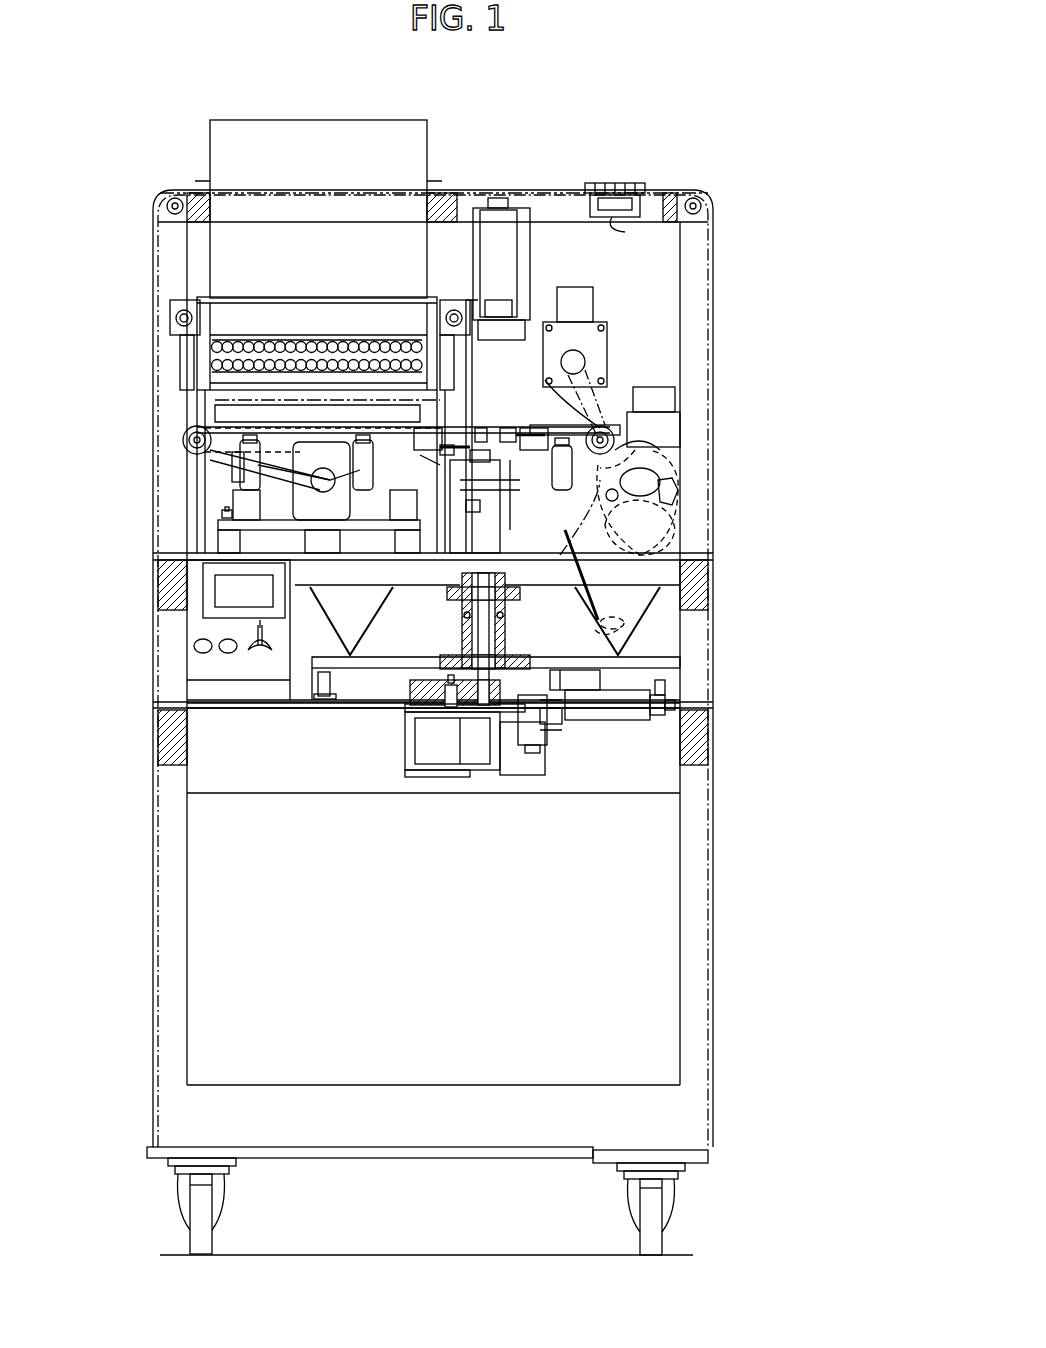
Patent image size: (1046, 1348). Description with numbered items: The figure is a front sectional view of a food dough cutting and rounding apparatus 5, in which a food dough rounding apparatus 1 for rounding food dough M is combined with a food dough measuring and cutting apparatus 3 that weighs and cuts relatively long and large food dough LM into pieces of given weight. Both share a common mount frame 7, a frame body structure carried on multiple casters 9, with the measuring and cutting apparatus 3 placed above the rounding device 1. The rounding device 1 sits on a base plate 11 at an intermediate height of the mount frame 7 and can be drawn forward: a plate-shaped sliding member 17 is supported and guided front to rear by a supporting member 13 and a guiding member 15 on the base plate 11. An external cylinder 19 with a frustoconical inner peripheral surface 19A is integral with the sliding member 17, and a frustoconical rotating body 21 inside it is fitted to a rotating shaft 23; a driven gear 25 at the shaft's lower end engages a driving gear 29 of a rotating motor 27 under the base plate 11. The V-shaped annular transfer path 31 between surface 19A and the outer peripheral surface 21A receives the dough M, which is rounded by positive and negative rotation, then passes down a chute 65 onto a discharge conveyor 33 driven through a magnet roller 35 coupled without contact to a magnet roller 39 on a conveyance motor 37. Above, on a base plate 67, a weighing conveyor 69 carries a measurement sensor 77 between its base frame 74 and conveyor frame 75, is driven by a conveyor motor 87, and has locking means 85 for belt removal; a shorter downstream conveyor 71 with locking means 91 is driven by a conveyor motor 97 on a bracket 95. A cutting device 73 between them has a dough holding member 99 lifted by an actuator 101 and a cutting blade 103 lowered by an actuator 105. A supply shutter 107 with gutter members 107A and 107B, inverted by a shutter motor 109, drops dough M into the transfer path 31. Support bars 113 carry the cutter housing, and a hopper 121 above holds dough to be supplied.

The food dough rounding apparatus 1 is at (660, 632).
The food dough measuring and cutting apparatus 3 is at (140, 350).
The food dough cutting and rounding apparatus 5 is at (740, 236).
The mount frame 7 is at (715, 808).
The casters 9 is at (232, 1206).
The base plate 11 is at (219, 710).
The supporting member 13 is at (682, 672).
The guiding member 15 is at (320, 690).
The sliding member 17 is at (315, 668).
The external cylinder 19 is at (300, 660).
The inner peripheral surface 19A is at (235, 620).
The rotating body 21 is at (375, 668).
The outer peripheral surface 21A is at (335, 700).
The rotating shaft 23 is at (487, 608).
The driven gear 25 is at (495, 705).
The rotating motor 27 is at (512, 770).
The driving gear 29 is at (448, 688).
The transfer path 31 is at (222, 645).
The discharge conveyor 33 is at (627, 722).
The magnet roller 35 is at (550, 735).
The conveyance motor 37 is at (432, 775).
The magnet roller 39 is at (532, 740).
The chute 65 is at (585, 690).
The base plate 67 is at (206, 590).
The weighing conveyor 69 is at (182, 442).
The downstream conveyor 71 is at (668, 418).
The cutting device 73 is at (542, 250).
The base frame 74 is at (240, 538).
The conveyor frame 75 is at (238, 462).
The measurement sensor 77 is at (232, 514).
The locking means 85 is at (362, 440).
The conveyor motor 87 is at (325, 470).
The locking means 91 is at (550, 470).
The bracket 95 is at (614, 430).
The conveyor motor 97 is at (608, 418).
The dough holding member 99 is at (456, 445).
The actuator 101 is at (460, 548).
The cutting blade 103 is at (597, 350).
The actuator 105 is at (505, 274).
The supply shutter 107 is at (680, 492).
The gutter member 107A is at (660, 478).
The gutter member 107B is at (670, 524).
The shutter motor 109 is at (672, 442).
The support bars 113 is at (176, 318).
The hopper 121 is at (315, 130).
The long and large food dough LM is at (215, 402).
The food dough M is at (650, 452).